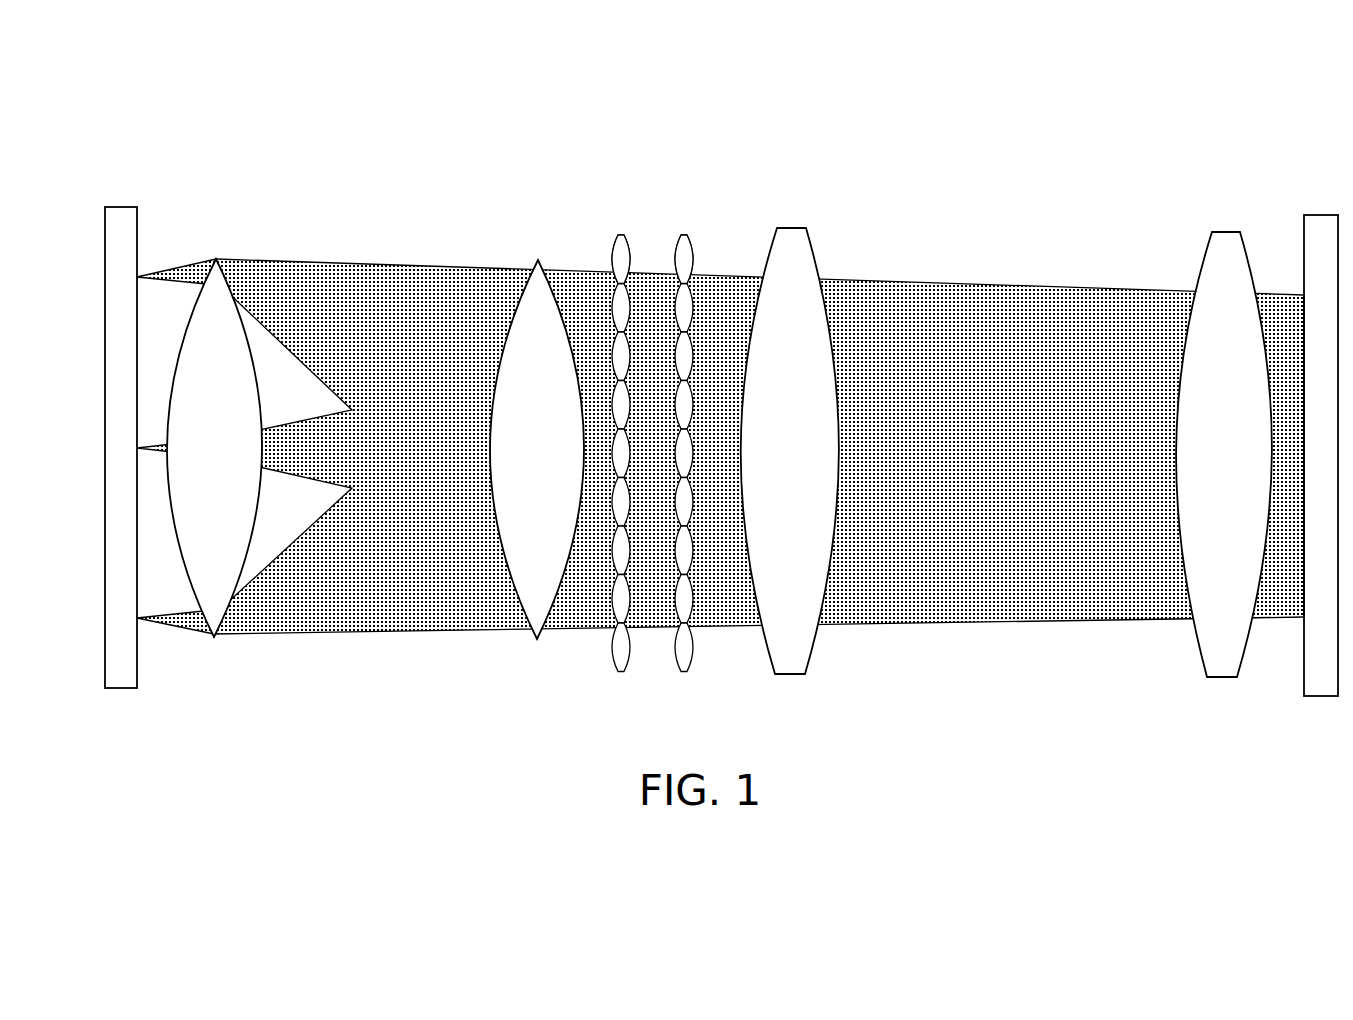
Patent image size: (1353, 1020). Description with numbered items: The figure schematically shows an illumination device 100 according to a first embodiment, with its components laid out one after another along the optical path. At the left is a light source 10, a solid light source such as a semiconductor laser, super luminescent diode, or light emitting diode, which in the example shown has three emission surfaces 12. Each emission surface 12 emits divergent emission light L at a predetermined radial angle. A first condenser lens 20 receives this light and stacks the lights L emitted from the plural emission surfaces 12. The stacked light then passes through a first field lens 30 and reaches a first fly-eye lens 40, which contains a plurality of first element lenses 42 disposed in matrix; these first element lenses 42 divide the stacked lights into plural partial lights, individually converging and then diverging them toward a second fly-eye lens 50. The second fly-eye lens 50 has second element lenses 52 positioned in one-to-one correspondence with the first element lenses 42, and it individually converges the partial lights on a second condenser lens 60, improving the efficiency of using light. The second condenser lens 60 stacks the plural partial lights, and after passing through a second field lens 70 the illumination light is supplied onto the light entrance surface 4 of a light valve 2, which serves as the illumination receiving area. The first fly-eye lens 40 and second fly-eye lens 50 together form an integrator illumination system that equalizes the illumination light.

The illumination device 100 is at (1294, 120).
The light source 10 is at (118, 215).
The emission surfaces 12 is at (137, 277).
The emission light L is at (169, 254).
The first condenser lens 20 is at (217, 283).
The first field lens 30 is at (542, 283).
The first fly-eye lens 40 is at (622, 247).
The first element lenses 42 is at (627, 262).
The second fly-eye lens 50 is at (686, 247).
The second element lenses 52 is at (690, 262).
The second condenser lens 60 is at (794, 236).
The second field lens 70 is at (1226, 240).
The light valve 2 is at (1317, 225).
The light entrance surface 4 is at (1302, 300).